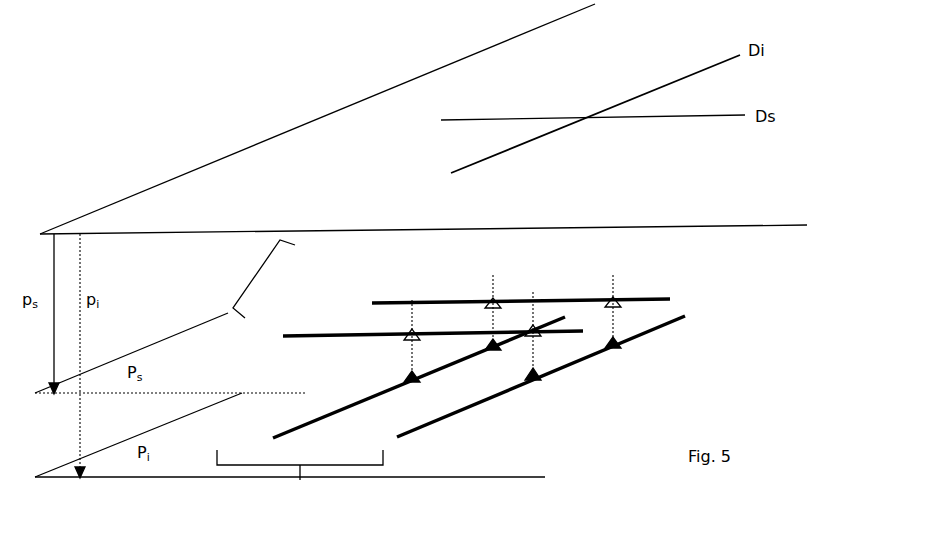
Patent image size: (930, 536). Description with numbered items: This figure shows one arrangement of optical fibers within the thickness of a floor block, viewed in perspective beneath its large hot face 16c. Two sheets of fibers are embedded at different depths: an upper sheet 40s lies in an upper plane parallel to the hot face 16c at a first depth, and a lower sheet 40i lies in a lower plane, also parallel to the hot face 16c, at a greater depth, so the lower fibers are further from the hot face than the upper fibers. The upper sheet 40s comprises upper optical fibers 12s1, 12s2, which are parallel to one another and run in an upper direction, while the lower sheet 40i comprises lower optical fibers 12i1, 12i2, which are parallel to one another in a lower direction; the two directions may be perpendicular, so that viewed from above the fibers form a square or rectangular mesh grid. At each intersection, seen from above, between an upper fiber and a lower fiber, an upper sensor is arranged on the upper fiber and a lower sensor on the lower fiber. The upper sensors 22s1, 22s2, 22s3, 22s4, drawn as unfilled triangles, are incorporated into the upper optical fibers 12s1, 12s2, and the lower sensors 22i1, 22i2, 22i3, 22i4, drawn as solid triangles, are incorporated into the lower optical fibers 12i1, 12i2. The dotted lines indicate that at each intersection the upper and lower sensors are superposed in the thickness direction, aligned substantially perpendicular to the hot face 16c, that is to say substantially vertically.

The hot face 16c is at (222, 181).
The upper sheet 40s is at (256, 272).
The lower sheet 40i is at (300, 484).
The upper optical fiber 12s1 is at (297, 335).
The upper optical fiber 12s2 is at (372, 303).
The lower optical fiber 12i1 is at (282, 432).
The lower optical fiber 12i2 is at (397, 426).
The upper sensor 22s1 is at (410, 329).
The upper sensor 22s2 is at (534, 326).
The upper sensor 22s3 is at (493, 298).
The upper sensor 22s4 is at (614, 298).
The lower sensor 22i1 is at (404, 379).
The lower sensor 22i2 is at (533, 381).
The lower sensor 22i3 is at (493, 350).
The lower sensor 22i4 is at (613, 350).